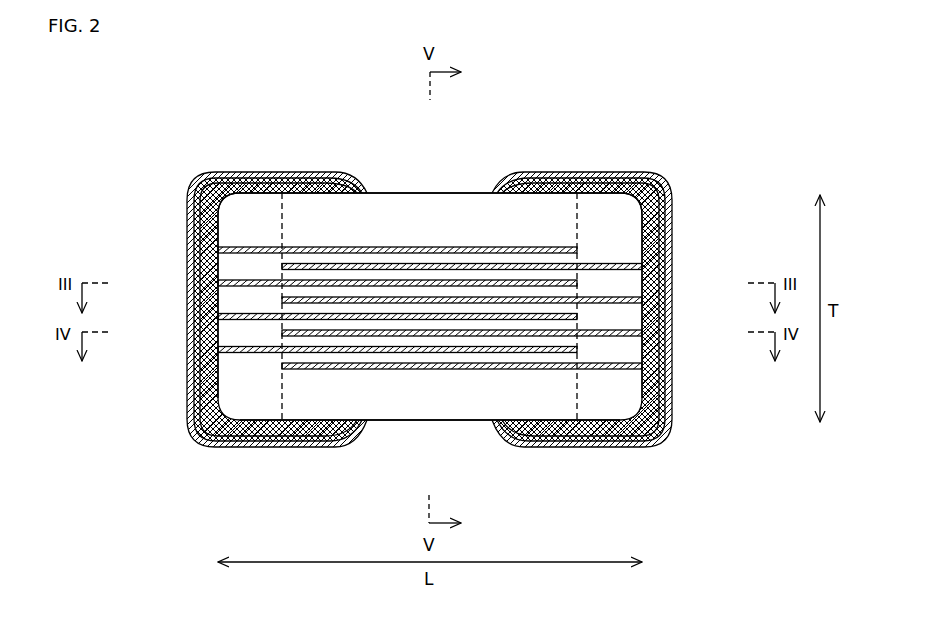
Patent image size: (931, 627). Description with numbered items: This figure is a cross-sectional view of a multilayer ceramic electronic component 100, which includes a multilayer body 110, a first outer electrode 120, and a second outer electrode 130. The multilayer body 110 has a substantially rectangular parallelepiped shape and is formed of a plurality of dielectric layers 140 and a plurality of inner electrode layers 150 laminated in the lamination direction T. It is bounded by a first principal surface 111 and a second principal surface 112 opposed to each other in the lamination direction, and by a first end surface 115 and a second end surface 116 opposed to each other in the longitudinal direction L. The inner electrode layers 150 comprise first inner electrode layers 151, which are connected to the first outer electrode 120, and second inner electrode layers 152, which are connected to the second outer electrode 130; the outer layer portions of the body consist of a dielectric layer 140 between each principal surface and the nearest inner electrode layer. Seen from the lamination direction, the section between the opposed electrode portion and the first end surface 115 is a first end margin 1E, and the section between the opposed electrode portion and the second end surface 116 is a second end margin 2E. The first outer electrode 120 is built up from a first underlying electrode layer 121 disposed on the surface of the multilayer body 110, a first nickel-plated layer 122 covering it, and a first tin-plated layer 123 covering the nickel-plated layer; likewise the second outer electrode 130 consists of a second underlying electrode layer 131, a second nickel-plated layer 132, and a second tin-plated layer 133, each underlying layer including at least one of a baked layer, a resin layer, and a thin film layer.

The multilayer ceramic electronic component 100 is at (627, 127).
The multilayer body 110 is at (430, 292).
The first principal surface 111 is at (482, 192).
The second principal surface 112 is at (452, 422).
The first end surface 115 is at (213, 222).
The second end surface 116 is at (647, 222).
The dielectric layer 140 is at (375, 200).
The inner electrode layer 150 is at (430, 248).
The first inner electrode layer 151 is at (403, 247).
The second inner electrode layer 152 is at (440, 264).
The first outer electrode 120 is at (229, 309).
The first underlying electrode layer 121 is at (208, 338).
The first nickel-plated layer 122 is at (198, 371).
The first tin-plated layer 123 is at (190, 404).
The second outer electrode 130 is at (634, 309).
The second underlying electrode layer 131 is at (651, 338).
The second nickel-plated layer 132 is at (661, 371).
The second tin-plated layer 133 is at (669, 404).
The first end margin 1E is at (250, 210).
The second end margin 2E is at (605, 210).